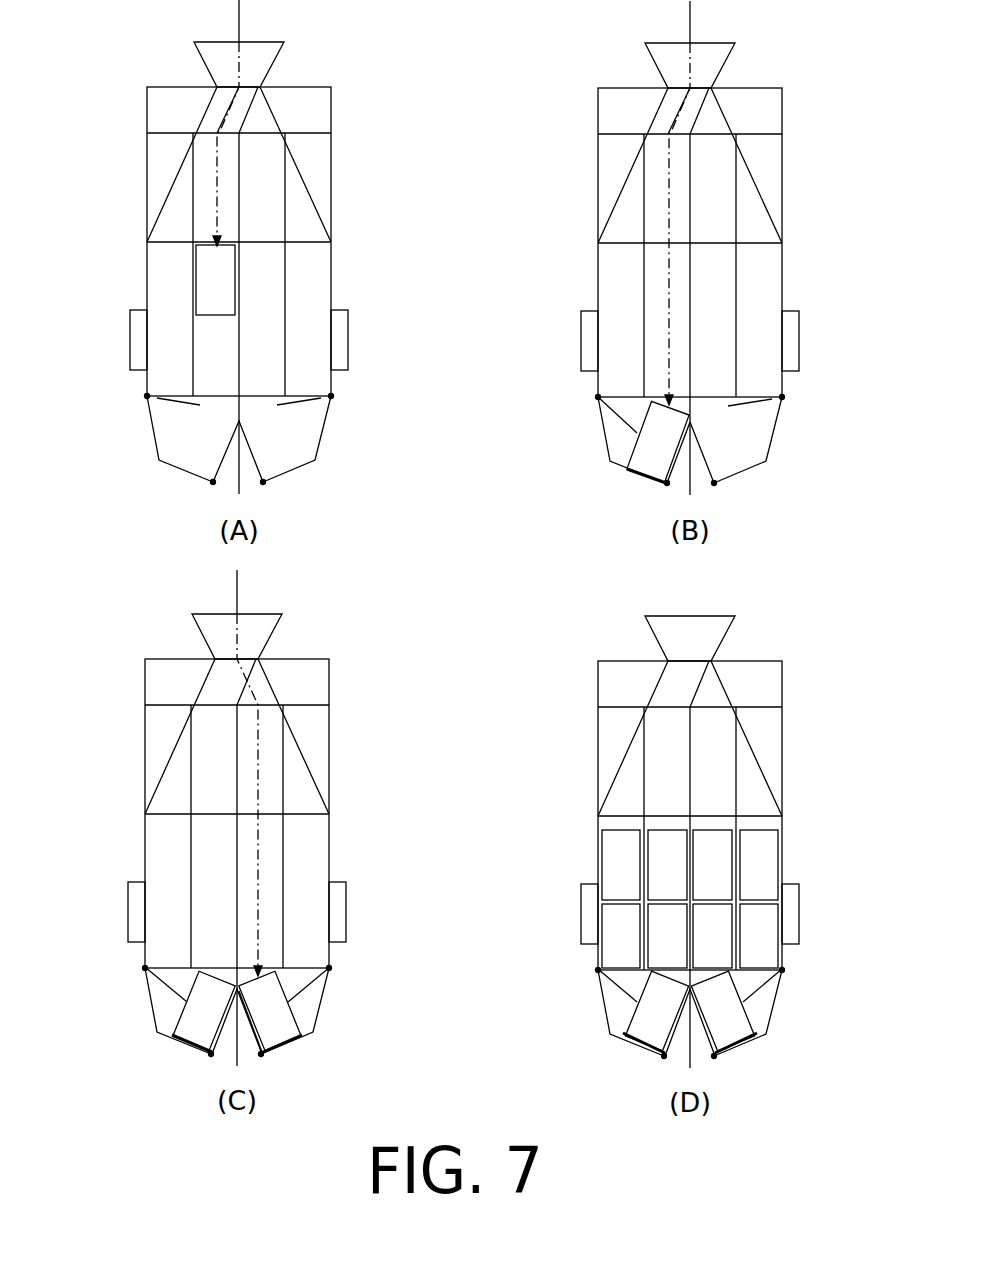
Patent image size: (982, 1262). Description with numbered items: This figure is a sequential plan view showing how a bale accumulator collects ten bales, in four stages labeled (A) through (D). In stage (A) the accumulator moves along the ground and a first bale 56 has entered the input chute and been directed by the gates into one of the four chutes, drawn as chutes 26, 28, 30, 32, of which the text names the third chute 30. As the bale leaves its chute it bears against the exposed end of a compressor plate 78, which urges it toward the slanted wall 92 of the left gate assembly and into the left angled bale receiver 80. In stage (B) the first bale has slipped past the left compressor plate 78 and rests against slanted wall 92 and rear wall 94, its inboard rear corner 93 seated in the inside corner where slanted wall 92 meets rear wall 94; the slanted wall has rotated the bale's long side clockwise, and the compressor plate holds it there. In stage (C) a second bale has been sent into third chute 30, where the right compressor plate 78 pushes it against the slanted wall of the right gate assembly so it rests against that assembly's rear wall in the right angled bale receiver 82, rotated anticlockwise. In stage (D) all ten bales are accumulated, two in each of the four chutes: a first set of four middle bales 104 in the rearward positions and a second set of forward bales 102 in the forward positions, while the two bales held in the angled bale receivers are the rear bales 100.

The first compartment 26 is at (560, 894).
The second compartment 28 is at (365, 550).
The third chute 30 is at (574, 550).
The fourth compartment 32 is at (821, 852).
The first bale 56 is at (139, 236).
The compressor plate 78 is at (466, 739).
The angled bale receiver 80 is at (149, 468).
The angled bale receiver 82 is at (323, 470).
The slanted wall 92 is at (470, 773).
The inboard rear corner 93 is at (613, 529).
The rear wall 94 is at (464, 788).
The rear bales 100 is at (462, 765).
The forward bales 102 is at (821, 846).
The middle bales 104 is at (821, 916).